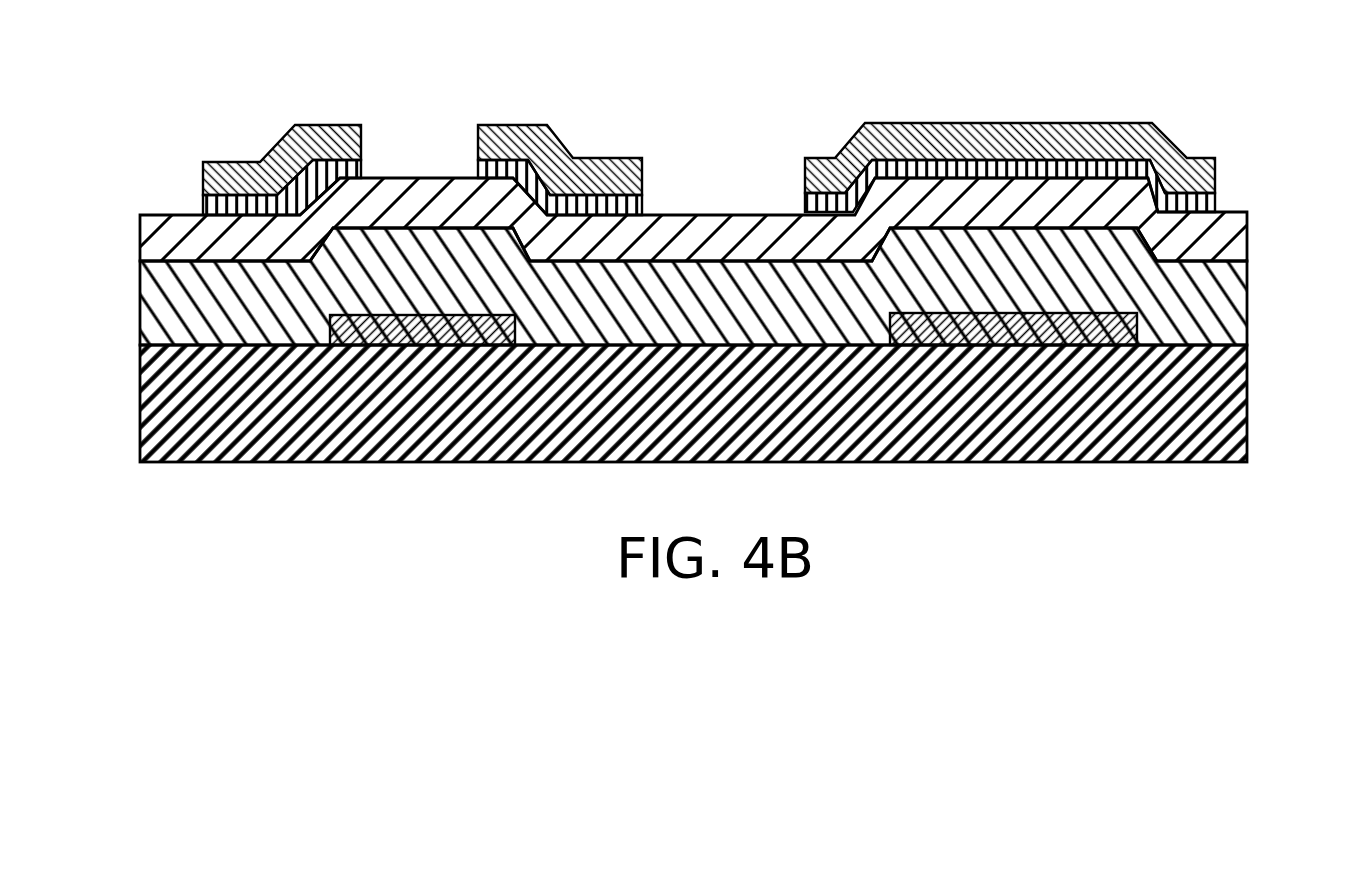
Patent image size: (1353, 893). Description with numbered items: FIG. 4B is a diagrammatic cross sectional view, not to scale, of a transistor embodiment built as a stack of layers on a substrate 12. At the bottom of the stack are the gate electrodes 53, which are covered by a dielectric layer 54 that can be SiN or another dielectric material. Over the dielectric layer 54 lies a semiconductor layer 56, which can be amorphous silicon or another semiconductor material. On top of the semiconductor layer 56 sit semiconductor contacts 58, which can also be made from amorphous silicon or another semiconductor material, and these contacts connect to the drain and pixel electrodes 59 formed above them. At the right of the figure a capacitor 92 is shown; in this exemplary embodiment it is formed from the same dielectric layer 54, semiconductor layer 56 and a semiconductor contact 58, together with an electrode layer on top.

The substrate 12 is at (1250, 405).
The gate electrodes 53 is at (330, 342).
The dielectric layer 54 is at (1250, 290).
The semiconductor layer 56 is at (1250, 233).
The semiconductor contacts 58 is at (203, 197).
The drain and pixel electrodes 59 is at (276, 146).
The capacitor 92 is at (1197, 112).